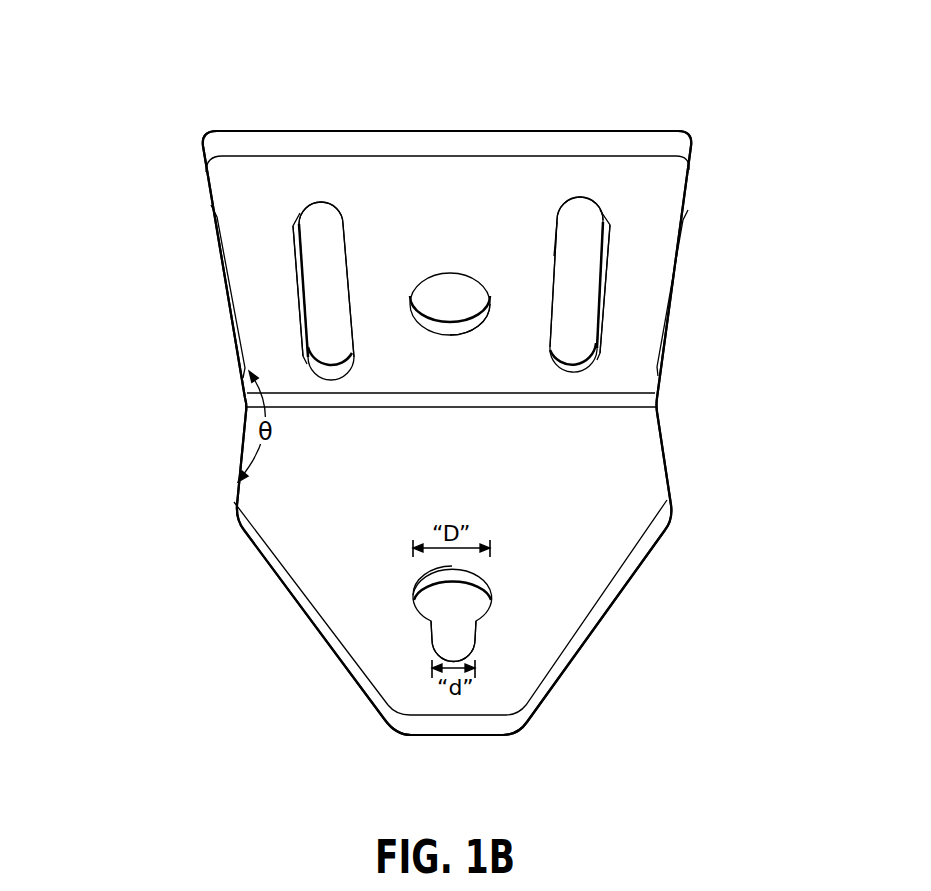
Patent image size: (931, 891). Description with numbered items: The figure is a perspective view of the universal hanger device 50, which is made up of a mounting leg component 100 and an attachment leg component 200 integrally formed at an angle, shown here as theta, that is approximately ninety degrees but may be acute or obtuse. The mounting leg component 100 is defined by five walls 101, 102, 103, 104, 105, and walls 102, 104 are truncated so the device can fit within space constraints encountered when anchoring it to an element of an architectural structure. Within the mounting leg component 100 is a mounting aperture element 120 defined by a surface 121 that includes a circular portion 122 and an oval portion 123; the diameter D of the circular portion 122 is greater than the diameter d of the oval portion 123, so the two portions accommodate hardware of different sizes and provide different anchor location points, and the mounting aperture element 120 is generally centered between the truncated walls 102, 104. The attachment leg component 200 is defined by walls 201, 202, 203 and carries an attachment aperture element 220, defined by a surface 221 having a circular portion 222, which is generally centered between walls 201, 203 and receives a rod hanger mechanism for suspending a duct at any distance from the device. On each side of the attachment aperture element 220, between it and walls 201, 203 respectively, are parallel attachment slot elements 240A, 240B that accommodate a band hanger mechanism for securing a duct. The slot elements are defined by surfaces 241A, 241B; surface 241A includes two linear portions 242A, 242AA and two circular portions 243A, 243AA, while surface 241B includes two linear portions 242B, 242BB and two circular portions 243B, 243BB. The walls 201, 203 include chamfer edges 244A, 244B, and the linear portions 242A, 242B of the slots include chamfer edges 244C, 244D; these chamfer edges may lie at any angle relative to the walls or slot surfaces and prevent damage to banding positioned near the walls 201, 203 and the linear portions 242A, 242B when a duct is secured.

The universal hanger device 50 is at (745, 130).
The mounting leg component 100 is at (620, 493).
The wall 101 is at (233, 468).
The truncated wall 102 is at (265, 562).
The wall 103 is at (435, 723).
The truncated wall 104 is at (562, 672).
The wall 105 is at (665, 445).
The mounting aperture element 120 is at (473, 605).
The surface 121 is at (492, 590).
The circular portion 122 is at (415, 612).
The oval portion 123 is at (430, 637).
The attachment leg component 200 is at (653, 292).
The wall 201 is at (230, 302).
The wall 202 is at (332, 147).
The wall 203 is at (683, 233).
The attachment aperture element 220 is at (450, 297).
The surface 221 is at (485, 313).
The circular portion 222 is at (487, 325).
The attachment slot element 240A is at (318, 227).
The attachment slot element 240B is at (600, 212).
The surface 241A is at (297, 230).
The surface 241B is at (603, 263).
The linear portion 242A is at (302, 310).
The linear portion 242B is at (605, 240).
The linear portion 242AA is at (352, 325).
The linear portion 242BB is at (563, 205).
The circular portion 243A is at (307, 207).
The circular portion 243B is at (585, 220).
The circular portion 243AA is at (328, 367).
The circular portion 243BB is at (583, 368).
The chamfer edge 244A is at (223, 270).
The chamfer edge 244B is at (677, 275).
The chamfer edge 244C is at (300, 257).
The chamfer edge 244D is at (598, 312).